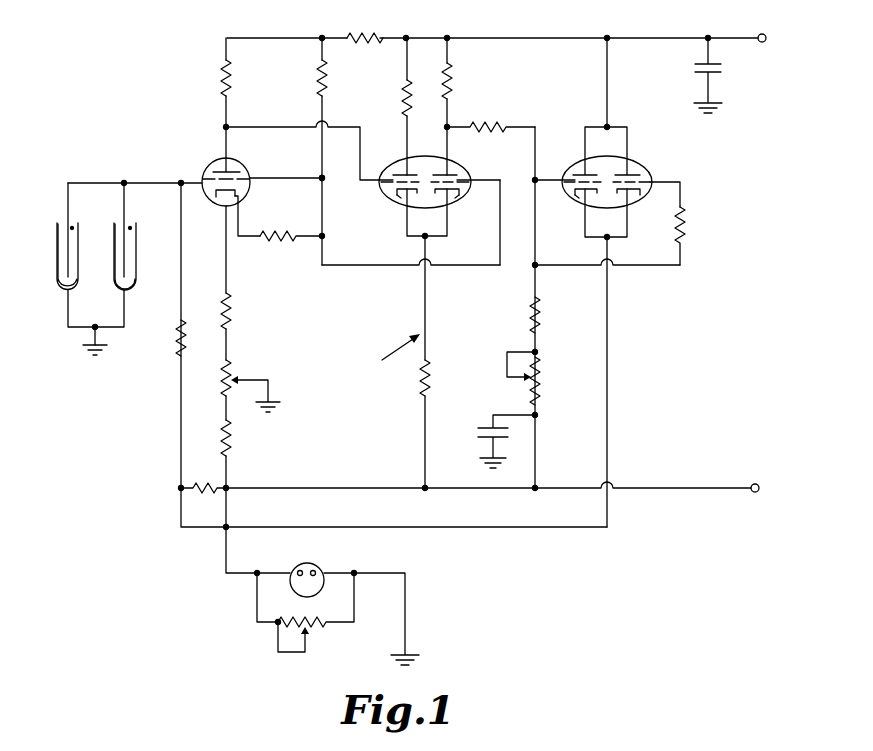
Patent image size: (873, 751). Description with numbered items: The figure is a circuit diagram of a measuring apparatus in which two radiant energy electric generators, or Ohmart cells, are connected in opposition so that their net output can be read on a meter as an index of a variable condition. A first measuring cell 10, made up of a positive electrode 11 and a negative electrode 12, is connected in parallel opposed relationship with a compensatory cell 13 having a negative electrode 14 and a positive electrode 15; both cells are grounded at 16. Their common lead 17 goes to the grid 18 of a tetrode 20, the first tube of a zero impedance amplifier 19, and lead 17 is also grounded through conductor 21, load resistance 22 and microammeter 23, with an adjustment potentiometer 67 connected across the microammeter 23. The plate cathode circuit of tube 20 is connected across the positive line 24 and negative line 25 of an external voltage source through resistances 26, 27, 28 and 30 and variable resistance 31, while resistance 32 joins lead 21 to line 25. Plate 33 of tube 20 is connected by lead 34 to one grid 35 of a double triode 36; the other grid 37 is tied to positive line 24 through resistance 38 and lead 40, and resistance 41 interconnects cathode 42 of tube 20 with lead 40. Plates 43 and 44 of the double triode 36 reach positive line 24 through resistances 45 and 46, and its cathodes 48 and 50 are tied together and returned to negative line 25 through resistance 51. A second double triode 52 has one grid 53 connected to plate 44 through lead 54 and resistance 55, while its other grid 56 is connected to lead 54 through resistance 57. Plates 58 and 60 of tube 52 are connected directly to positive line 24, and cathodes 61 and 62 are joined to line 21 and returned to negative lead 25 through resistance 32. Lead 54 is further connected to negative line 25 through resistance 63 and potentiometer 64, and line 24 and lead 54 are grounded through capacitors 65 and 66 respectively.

The measuring cell 10 is at (53, 252).
The positive electrode 11 is at (68, 208).
The negative electrode 12 is at (79, 263).
The compensatory cell 13 is at (140, 265).
The negative electrode 14 is at (125, 205).
The positive electrode 15 is at (136, 283).
The ground 16 is at (85, 346).
The common lead 17 is at (146, 182).
The grid 18 is at (217, 198).
The zero impedance amplifier 19 is at (387, 355).
The tetrode 20 is at (209, 163).
The conductor 21 is at (185, 294).
The load resistance 22 is at (183, 356).
The microammeter 23 is at (316, 564).
The positive line 24 is at (760, 43).
The negative line 25 is at (754, 493).
The resistance 26 is at (221, 79).
The resistance 27 is at (358, 36).
The resistance 28 is at (231, 316).
The resistance 30 is at (231, 454).
The variable resistance 31 is at (234, 368).
The resistance 32 is at (204, 493).
The plate 33 is at (232, 168).
The lead 34 is at (278, 127).
The grid 35 is at (384, 200).
The double triode 36 is at (472, 165).
The grid 37 is at (466, 197).
The resistance 38 is at (327, 86).
The lead 40 is at (316, 165).
The resistance 41 is at (276, 240).
The cathode 42 is at (242, 197).
The plate 43 is at (400, 170).
The plate 44 is at (451, 173).
The resistance 45 is at (403, 95).
The resistance 46 is at (458, 86).
The cathode 48 is at (394, 205).
The cathode 50 is at (458, 205).
The resistance 51 is at (431, 370).
The double triode 52 is at (656, 165).
The grid 53 is at (583, 174).
The lead 54 is at (535, 140).
The resistance 55 is at (487, 123).
The grid 56 is at (644, 196).
The resistance 57 is at (686, 236).
The plate 58 is at (589, 172).
The plate 60 is at (629, 172).
The cathode 61 is at (577, 202).
The cathode 62 is at (622, 198).
The resistance 63 is at (545, 323).
The potentiometer 64 is at (545, 383).
The capacitor 65 is at (698, 74).
The capacitor 66 is at (480, 426).
The adjustment potentiometer 67 is at (312, 627).